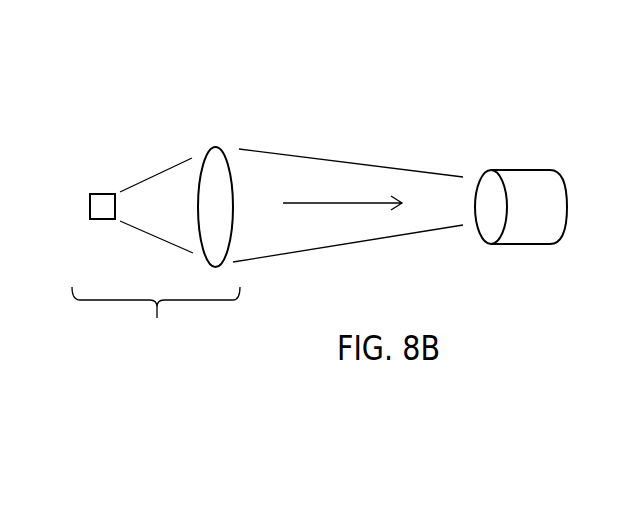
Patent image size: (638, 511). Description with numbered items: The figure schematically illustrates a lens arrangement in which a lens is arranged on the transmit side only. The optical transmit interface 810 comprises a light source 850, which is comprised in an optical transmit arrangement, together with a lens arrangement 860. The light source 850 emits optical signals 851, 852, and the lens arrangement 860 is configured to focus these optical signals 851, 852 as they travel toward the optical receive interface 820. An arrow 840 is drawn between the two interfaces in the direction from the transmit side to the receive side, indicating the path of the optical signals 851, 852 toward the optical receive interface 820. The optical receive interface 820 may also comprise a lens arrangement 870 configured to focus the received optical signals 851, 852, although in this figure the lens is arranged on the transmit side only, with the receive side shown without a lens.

The optical transmit interface 810 is at (156, 324).
The optical receive interface 820 is at (527, 173).
The light propagation direction 840 is at (342, 192).
The light source 850 is at (103, 205).
The optical signal 851 is at (160, 193).
The optical signal 852 is at (422, 198).
The lens arrangement 860 is at (215, 157).
The lens arrangement 870 is at (281, 504).